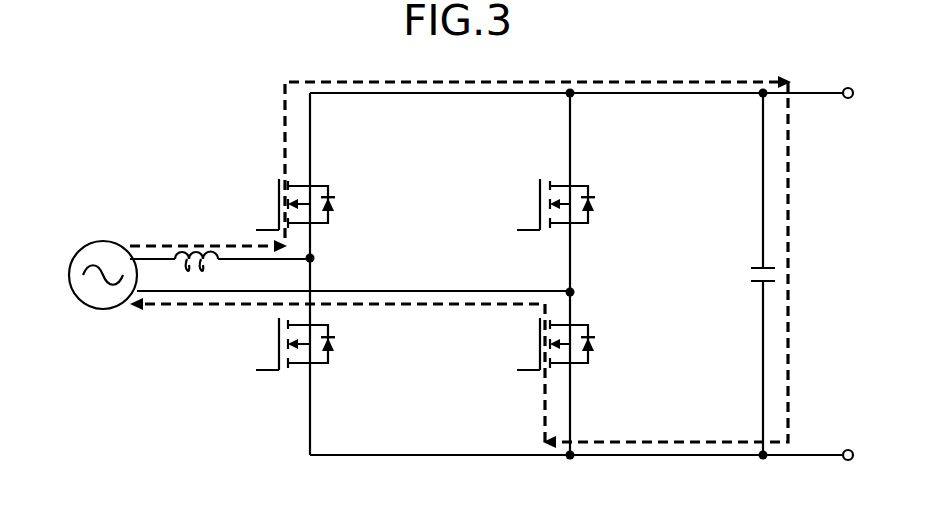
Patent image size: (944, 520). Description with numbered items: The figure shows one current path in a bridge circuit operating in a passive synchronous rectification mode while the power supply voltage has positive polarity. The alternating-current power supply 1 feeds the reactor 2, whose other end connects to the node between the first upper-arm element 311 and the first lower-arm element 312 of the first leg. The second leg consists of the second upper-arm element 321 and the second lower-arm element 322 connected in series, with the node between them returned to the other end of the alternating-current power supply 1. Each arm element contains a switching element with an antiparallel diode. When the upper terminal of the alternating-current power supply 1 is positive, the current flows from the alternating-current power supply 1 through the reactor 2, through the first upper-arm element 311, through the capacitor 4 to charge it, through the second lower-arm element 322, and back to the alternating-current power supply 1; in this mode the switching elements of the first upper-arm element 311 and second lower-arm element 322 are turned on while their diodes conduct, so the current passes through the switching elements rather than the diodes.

The alternating-current power supply 1 is at (104, 241).
The reactor 2 is at (197, 245).
The first upper-arm element 311 is at (324, 179).
The first lower-arm element 312 is at (325, 374).
The second upper-arm element 321 is at (584, 179).
The second lower-arm element 322 is at (585, 374).
The capacitor 4 is at (754, 268).